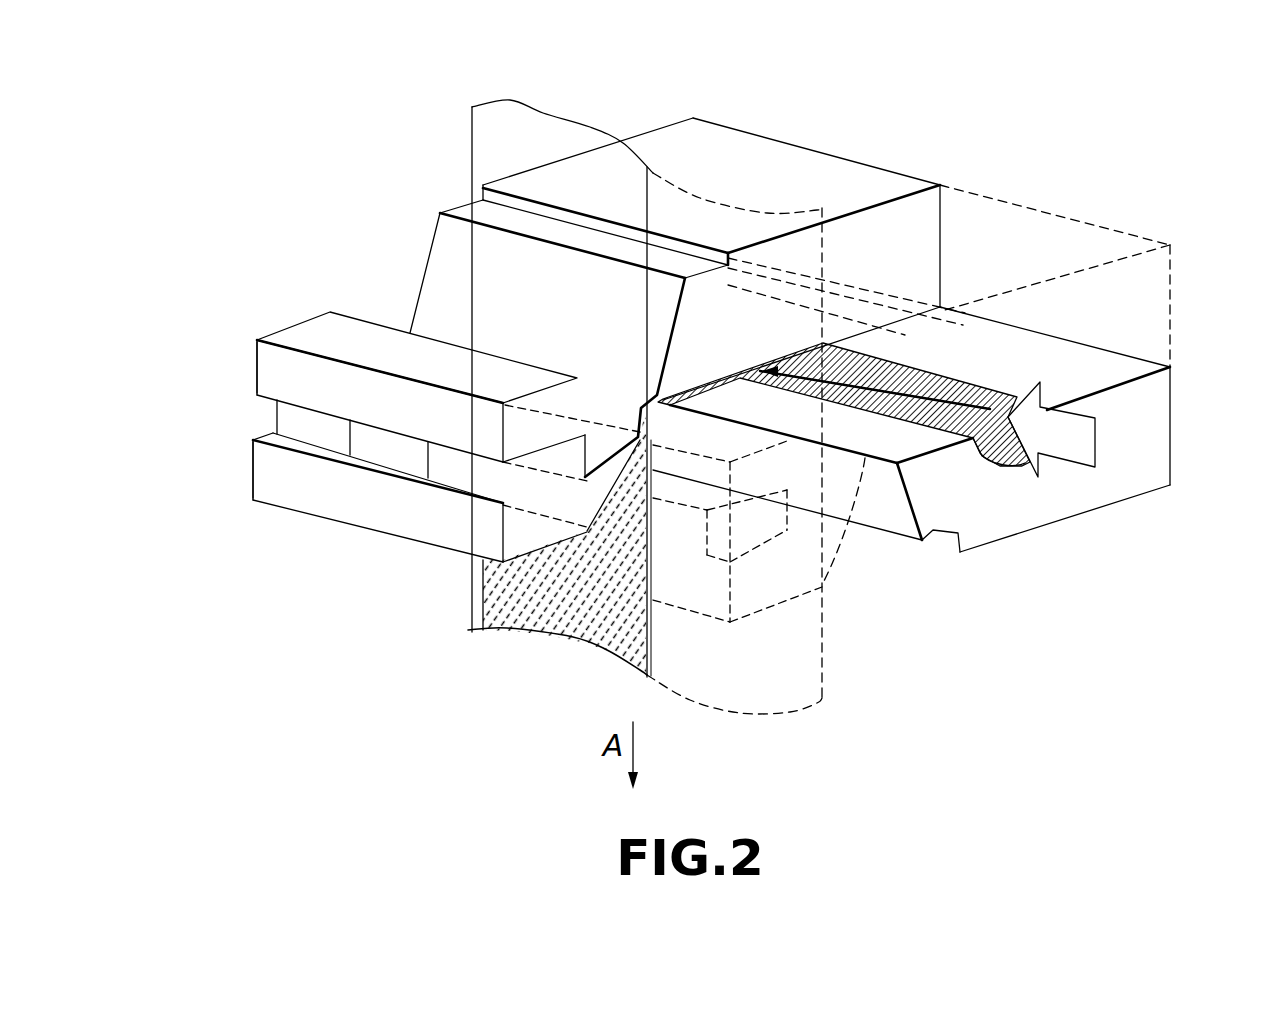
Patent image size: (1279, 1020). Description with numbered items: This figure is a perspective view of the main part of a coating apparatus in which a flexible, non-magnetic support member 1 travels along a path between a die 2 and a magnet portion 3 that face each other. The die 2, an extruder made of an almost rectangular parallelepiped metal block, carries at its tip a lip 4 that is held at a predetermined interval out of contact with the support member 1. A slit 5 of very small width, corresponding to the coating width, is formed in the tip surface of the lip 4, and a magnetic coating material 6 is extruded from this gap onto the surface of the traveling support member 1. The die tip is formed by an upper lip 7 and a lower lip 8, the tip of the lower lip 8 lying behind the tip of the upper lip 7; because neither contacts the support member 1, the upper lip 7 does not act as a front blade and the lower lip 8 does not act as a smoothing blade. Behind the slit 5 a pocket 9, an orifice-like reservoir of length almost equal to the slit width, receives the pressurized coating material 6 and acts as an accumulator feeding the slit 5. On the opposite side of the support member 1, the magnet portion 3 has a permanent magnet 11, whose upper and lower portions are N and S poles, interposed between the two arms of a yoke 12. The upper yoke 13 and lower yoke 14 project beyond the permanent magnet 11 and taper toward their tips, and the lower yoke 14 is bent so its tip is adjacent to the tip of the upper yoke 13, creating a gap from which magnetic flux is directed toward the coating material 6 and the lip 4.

The support member 1 is at (543, 115).
The die 2 is at (826, 334).
The magnet portion 3 is at (262, 301).
The lip 4 is at (457, 202).
The slit 5 is at (712, 388).
The coating material 6 is at (949, 438).
The upper lip 7 is at (433, 268).
The lower lip 8 is at (933, 530).
The pocket 9 is at (1012, 467).
The permanent magnet 11 is at (460, 483).
The yoke 12 is at (258, 373).
The upper yoke 13 is at (345, 320).
The lower yoke 14 is at (453, 542).